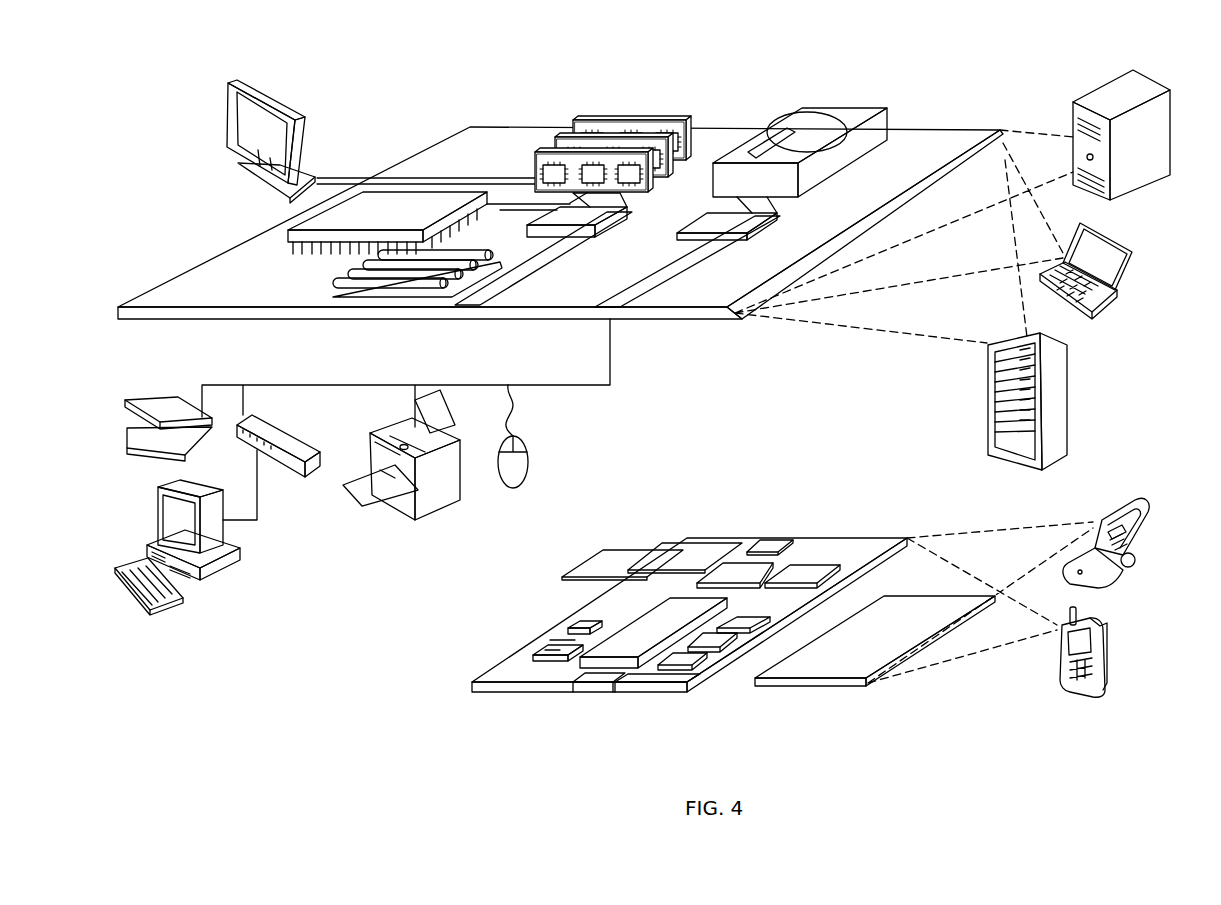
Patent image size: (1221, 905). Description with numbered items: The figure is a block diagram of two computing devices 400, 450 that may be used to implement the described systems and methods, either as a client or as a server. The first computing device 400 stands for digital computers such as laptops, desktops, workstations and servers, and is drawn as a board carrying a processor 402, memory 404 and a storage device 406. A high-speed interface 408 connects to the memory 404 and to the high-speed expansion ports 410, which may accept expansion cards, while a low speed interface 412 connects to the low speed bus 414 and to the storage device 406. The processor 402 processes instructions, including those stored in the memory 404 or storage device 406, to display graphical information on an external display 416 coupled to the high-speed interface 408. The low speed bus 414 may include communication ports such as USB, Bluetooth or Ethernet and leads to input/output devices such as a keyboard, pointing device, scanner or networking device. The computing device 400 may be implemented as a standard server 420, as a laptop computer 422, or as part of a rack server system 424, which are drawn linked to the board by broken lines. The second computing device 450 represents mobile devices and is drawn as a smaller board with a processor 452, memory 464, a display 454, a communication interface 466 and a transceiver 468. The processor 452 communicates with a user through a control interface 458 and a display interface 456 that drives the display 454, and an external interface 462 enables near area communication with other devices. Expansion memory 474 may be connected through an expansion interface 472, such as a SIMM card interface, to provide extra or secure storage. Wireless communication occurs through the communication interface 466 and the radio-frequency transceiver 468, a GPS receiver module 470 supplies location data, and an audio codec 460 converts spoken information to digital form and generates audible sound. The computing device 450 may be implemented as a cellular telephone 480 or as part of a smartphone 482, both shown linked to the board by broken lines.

The computing device 400 is at (400, 98).
The processor 402 is at (288, 232).
The memory 404 is at (578, 118).
The storage device 406 is at (782, 107).
The high-speed interface 408 is at (548, 217).
The high-speed expansion ports 410 is at (333, 290).
The low speed interface 412 is at (707, 213).
The low speed bus 414 is at (615, 312).
The display 416 is at (230, 82).
The standard server 420 is at (1067, 115).
The laptop computer 422 is at (1130, 252).
The rack server system 424 is at (985, 423).
The computing device 450 is at (446, 692).
The processor 452 is at (628, 653).
The display 454 is at (840, 670).
The display interface 456 is at (688, 657).
The control interface 458 is at (728, 635).
The audio codec 460 is at (742, 622).
The external interface 462 is at (597, 690).
The memory 464 is at (555, 643).
The communication interface 466 is at (733, 570).
The transceiver 468 is at (803, 570).
The GPS receiver module 470 is at (773, 540).
The expansion interface 472 is at (667, 553).
The expansion memory 474 is at (600, 552).
The cellular telephone 480 is at (1117, 497).
The smartphone 482 is at (1060, 657).